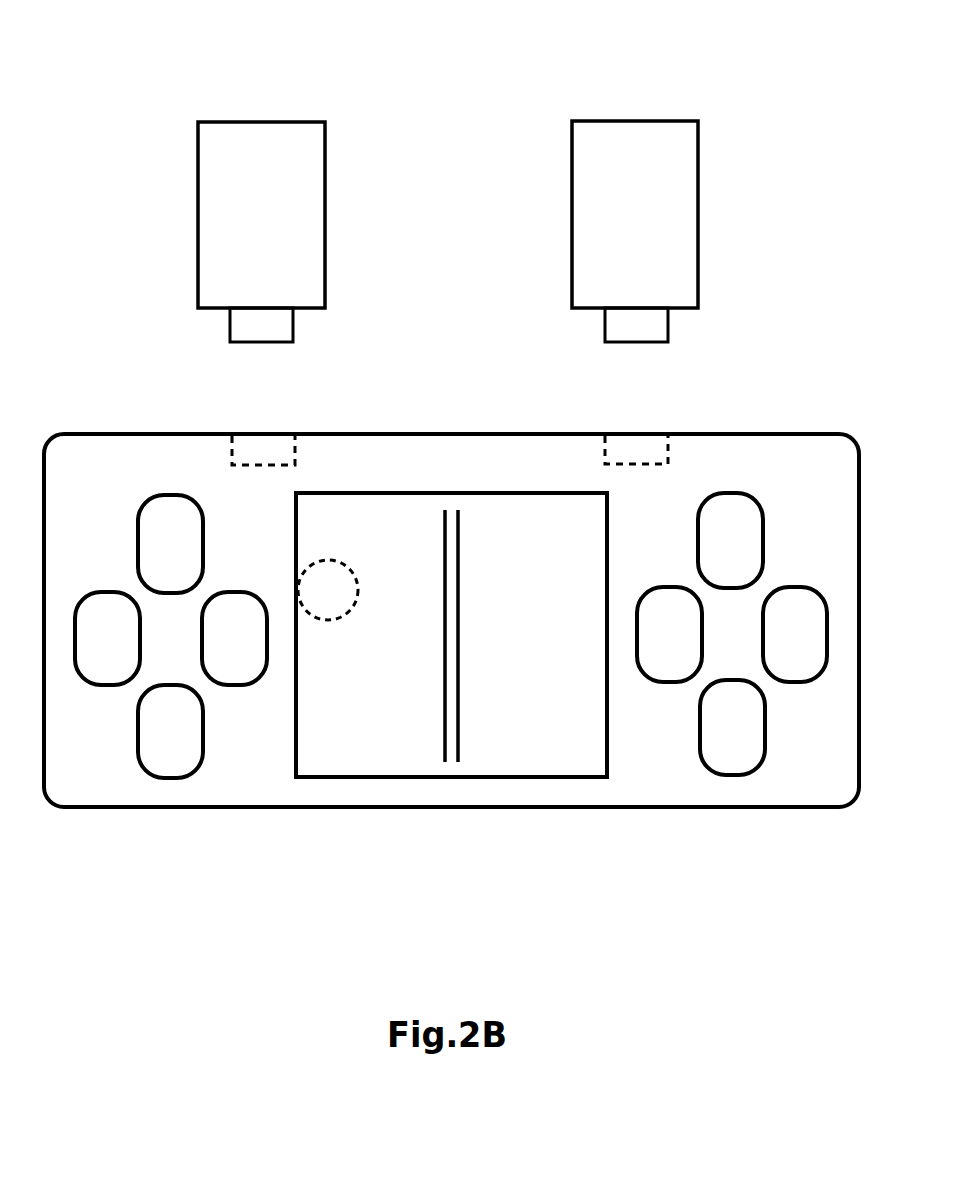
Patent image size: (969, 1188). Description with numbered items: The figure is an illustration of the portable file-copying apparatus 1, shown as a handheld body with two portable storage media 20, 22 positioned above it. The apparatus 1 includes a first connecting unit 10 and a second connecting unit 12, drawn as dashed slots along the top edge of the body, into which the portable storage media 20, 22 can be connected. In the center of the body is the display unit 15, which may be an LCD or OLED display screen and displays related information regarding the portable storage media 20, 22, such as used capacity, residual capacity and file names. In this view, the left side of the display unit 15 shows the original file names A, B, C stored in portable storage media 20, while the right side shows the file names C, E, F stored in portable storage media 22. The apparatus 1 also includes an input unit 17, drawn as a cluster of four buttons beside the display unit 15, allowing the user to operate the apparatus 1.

The portable file-copying apparatus 1 is at (108, 432).
The first connecting unit 10 is at (246, 452).
The second connecting unit 12 is at (621, 450).
The display unit 15 is at (328, 778).
The input unit 17 is at (733, 777).
The portable storage media 20 is at (199, 122).
The portable storage media 22 is at (573, 121).